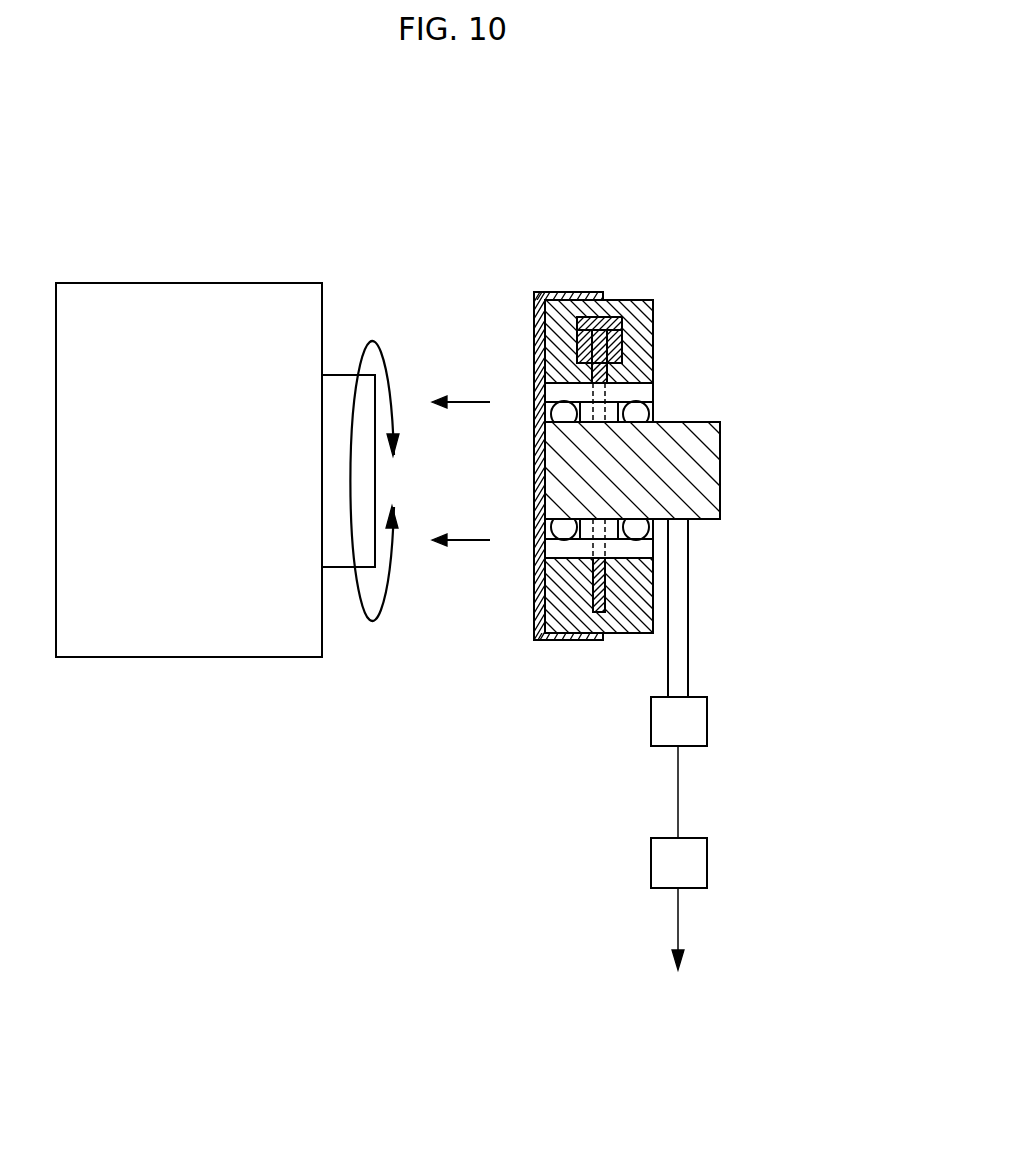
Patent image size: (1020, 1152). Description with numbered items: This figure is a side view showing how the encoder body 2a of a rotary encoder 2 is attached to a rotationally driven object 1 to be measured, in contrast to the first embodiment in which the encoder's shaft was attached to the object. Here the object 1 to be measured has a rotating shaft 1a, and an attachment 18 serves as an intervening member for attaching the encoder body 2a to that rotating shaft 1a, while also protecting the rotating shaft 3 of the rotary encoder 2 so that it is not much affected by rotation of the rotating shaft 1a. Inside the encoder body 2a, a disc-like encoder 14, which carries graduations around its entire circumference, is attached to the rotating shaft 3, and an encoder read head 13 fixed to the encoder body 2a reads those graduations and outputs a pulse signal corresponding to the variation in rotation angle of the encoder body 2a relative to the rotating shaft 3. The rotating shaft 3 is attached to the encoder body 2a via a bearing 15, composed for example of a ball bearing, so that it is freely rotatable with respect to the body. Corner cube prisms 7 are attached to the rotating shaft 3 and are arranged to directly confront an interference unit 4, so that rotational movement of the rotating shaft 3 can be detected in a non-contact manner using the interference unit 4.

The object to be measured 1 is at (165, 640).
The rotating shaft of the object to be measured 1a is at (343, 568).
The rotary encoder 2 is at (602, 673).
The encoder body 2a is at (562, 292).
The rotating shaft 3 is at (680, 432).
The interference unit 4 is at (708, 862).
The corner cube prisms 7 is at (708, 718).
The encoder read head 13 is at (633, 313).
The encoder 14 is at (593, 608).
The bearing 15 is at (557, 528).
The attachment 18 is at (540, 322).